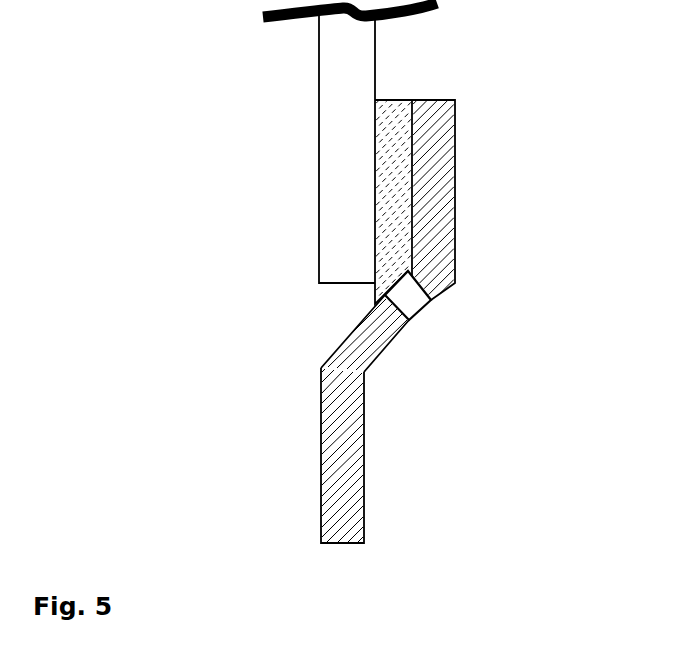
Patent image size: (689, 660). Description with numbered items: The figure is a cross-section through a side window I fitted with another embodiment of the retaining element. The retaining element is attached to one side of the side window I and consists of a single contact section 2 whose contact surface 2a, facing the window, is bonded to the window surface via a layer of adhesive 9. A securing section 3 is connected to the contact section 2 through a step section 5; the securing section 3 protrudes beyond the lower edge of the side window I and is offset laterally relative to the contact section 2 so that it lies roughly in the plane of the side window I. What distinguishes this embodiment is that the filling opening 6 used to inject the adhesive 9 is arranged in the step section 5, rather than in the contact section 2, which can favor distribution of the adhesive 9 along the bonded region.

The side window I is at (332, 88).
The adhesive 9 is at (390, 110).
The contact section 2 is at (443, 130).
The contact surface 2a is at (412, 207).
The step section 5 is at (363, 340).
The filling opening 6 is at (409, 302).
The securing section 3 is at (332, 437).